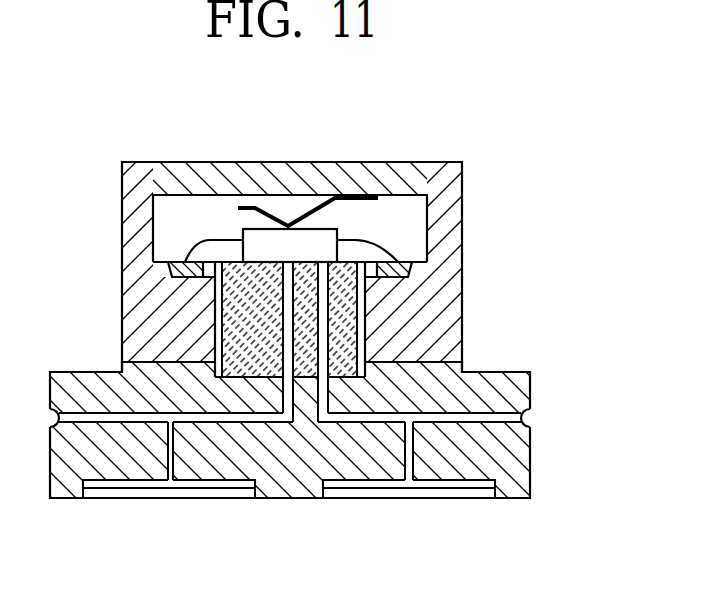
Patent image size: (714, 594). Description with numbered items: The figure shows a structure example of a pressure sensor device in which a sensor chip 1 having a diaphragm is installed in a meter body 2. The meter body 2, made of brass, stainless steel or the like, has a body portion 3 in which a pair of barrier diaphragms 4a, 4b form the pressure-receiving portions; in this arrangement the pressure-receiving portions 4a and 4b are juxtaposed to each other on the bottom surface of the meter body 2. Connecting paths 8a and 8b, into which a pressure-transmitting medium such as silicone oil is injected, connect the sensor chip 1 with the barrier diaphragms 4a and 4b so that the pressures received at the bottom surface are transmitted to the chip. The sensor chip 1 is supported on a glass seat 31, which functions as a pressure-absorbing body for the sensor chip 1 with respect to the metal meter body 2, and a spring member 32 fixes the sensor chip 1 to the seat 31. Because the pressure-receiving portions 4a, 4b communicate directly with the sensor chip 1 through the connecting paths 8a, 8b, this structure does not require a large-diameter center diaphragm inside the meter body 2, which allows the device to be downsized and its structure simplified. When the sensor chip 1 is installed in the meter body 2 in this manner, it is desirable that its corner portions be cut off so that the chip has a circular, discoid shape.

The sensor chip 1 is at (318, 239).
The meter body 2 is at (467, 276).
The body portion 3 is at (503, 460).
The barrier diaphragm 4a is at (164, 492).
The barrier diaphragm 4b is at (399, 492).
The connecting path 8a is at (90, 413).
The connecting path 8b is at (483, 413).
The glass seat 31 is at (238, 307).
The spring member 32 is at (248, 208).